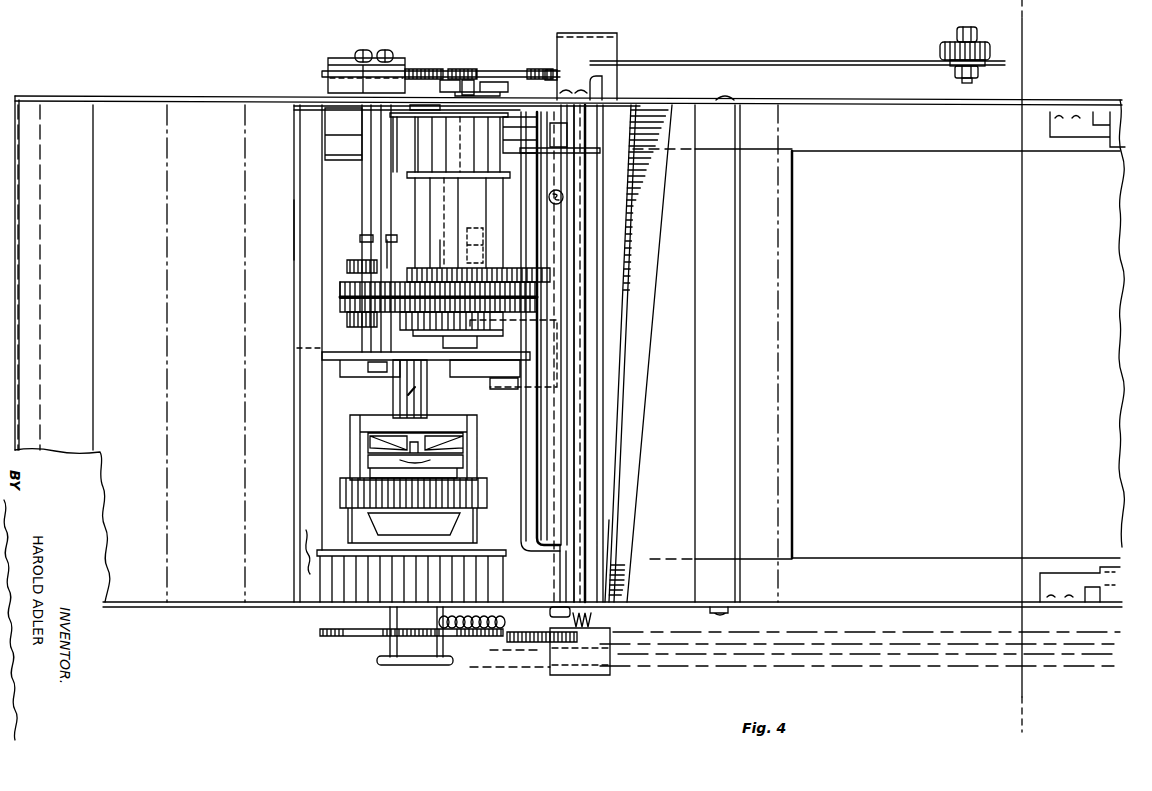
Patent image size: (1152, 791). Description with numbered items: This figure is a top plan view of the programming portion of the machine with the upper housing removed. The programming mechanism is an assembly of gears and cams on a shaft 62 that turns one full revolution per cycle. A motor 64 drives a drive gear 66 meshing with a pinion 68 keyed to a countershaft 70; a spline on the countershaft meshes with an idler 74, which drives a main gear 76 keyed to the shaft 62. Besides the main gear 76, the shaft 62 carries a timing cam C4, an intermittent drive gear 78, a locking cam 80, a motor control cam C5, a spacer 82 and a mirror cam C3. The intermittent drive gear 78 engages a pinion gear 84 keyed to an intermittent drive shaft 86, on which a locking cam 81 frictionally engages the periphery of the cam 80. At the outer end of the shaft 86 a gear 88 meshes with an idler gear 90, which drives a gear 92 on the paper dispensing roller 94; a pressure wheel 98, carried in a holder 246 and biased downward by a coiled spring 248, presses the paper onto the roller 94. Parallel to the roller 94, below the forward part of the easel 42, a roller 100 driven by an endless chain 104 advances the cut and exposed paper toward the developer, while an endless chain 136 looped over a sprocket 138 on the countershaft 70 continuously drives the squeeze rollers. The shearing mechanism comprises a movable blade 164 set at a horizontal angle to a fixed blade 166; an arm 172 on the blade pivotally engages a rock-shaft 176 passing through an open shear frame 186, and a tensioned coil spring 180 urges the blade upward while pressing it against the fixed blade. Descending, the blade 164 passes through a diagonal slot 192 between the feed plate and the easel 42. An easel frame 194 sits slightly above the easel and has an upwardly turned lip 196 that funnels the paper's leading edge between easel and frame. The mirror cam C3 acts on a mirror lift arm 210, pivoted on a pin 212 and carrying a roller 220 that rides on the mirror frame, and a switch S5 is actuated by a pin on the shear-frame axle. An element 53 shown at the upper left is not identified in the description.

The easel 42 is at (917, 419).
The easel frame 194 is at (680, 413).
The upwardly turned lip 196 is at (645, 290).
The movable blade 164 is at (588, 304).
The fixed blade 166 is at (597, 283).
The shear frame 186 is at (560, 233).
The diagonal slot 192 is at (607, 482).
The mirror lift arm 210 is at (793, 62).
The roller 220 is at (940, 52).
The rock-shaft 176 is at (587, 66).
The blade arm 172 is at (583, 150).
The gear 88 is at (322, 73).
The idler gear 90 is at (458, 72).
The gear 92 is at (535, 72).
The mirror cam C3 is at (426, 97).
The bracket 53 is at (350, 126).
The pin 212 is at (382, 184).
The spacer 82 is at (447, 144).
The drive gear 66 is at (416, 171).
The shaft 62 is at (458, 187).
The intermittent drive shaft 86 is at (320, 230).
The motor control cam C5 is at (438, 231).
The spring 248 is at (483, 239).
The intermittent drive gear 78 is at (392, 283).
The locking cam 80 is at (437, 272).
The locking cam 81 is at (347, 267).
The pinion gear 84 is at (345, 285).
The idler 74 is at (345, 305).
The main gear 76 is at (400, 308).
The timing cam C4 is at (547, 332).
The switch S5 is at (485, 368).
The pressure wheel 98 is at (518, 382).
The holder 246 is at (457, 382).
The countershaft 70 is at (395, 407).
The motor 64 is at (338, 528).
The paper dispensing roller 94 is at (523, 498).
The pinion 68 is at (320, 634).
The tensioned coil spring 180 is at (462, 638).
The sprocket 138 is at (404, 665).
The roller 100 is at (612, 642).
The endless chain 104 is at (963, 634).
The endless chain 136 is at (912, 668).